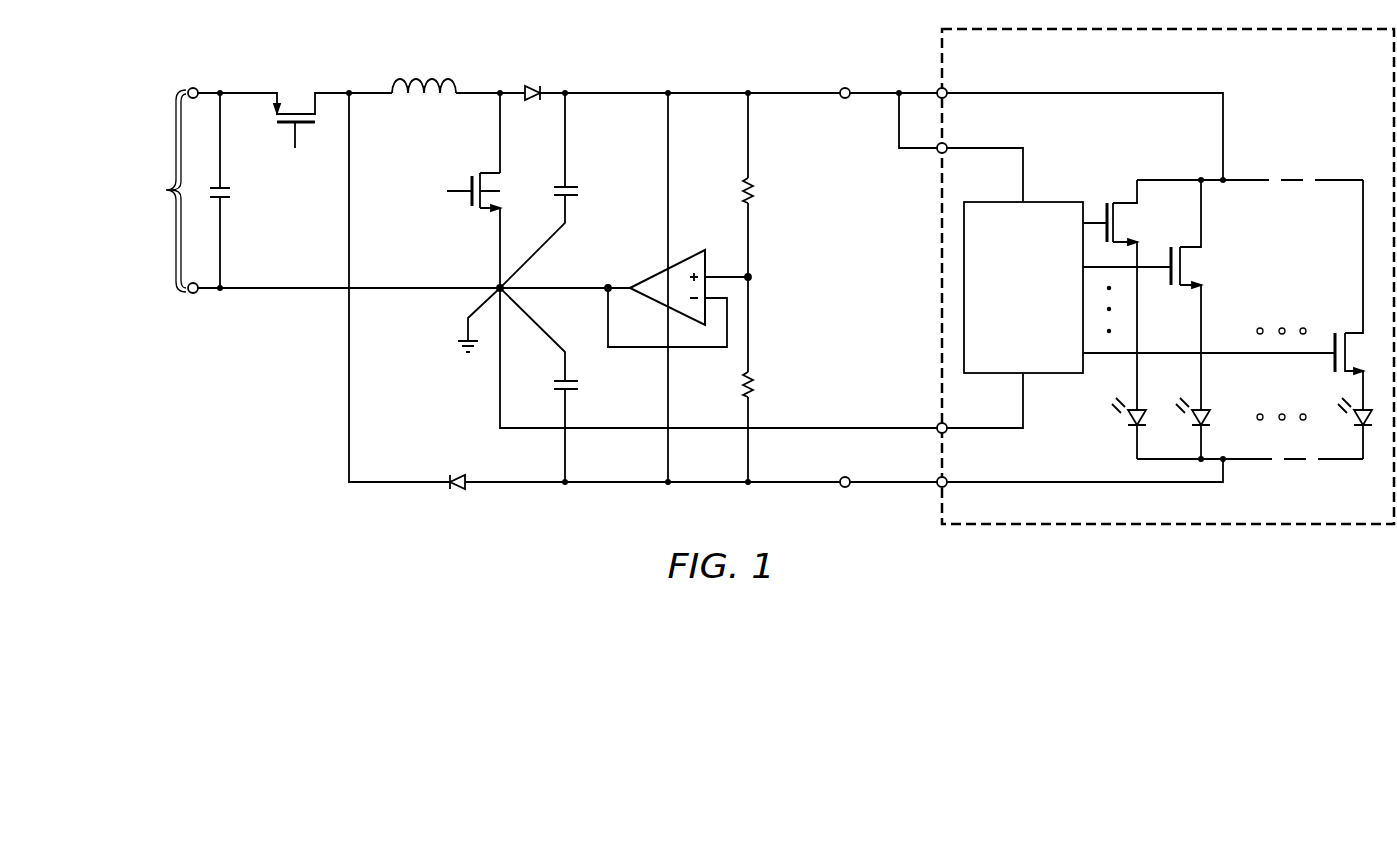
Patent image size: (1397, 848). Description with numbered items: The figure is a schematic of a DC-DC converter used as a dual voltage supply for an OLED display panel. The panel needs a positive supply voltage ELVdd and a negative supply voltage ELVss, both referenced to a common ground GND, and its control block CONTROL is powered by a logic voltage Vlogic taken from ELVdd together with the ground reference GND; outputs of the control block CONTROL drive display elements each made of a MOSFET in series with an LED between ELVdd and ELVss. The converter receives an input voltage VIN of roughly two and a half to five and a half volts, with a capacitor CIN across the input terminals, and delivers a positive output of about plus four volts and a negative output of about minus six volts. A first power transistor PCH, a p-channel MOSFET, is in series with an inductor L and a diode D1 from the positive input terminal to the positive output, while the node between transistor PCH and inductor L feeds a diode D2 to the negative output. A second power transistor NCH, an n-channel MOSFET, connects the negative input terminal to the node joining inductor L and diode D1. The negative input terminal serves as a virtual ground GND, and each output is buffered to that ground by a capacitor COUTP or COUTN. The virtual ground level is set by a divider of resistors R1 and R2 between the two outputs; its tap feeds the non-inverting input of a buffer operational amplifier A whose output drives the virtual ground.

The input voltage VIN is at (124, 190).
The capacitor CIN is at (238, 190).
The first power transistor PCH is at (294, 138).
The inductor L is at (424, 73).
The diode D1 is at (532, 79).
The second power transistor NCH is at (450, 192).
The capacitor COUTP is at (599, 192).
The capacitor COUTN is at (599, 386).
The linear operational amplifier A is at (676, 298).
The resistor R1 is at (761, 190).
The resistor R2 is at (761, 384).
The diode D2 is at (457, 470).
The positive supply voltage ELVdd is at (1080, 123).
The logic voltage Vlogic is at (980, 161).
The common ground GND is at (980, 403).
The negative supply voltage ELVss is at (1080, 471).
The control block CONTROL is at (1149, 287).